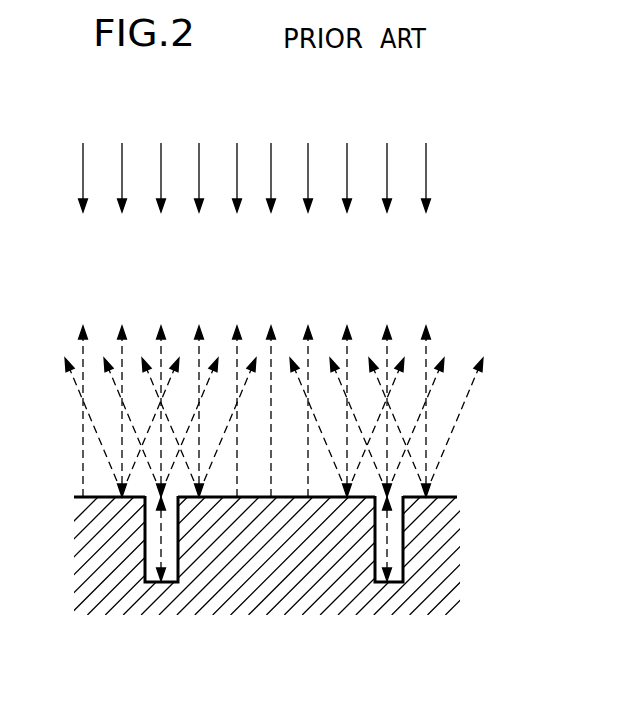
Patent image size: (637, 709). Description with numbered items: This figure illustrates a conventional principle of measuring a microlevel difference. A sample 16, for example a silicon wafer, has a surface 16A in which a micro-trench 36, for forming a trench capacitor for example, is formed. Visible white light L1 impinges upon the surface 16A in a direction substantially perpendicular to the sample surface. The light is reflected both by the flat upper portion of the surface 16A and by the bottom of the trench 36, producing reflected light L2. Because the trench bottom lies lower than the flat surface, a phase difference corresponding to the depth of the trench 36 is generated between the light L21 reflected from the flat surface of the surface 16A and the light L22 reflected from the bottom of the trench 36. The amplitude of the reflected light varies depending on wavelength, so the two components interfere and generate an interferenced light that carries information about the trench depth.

The visible white light L1 is at (427, 163).
The reflected light L2 is at (501, 271).
The light reflected from the bottom of the trench L22 is at (388, 359).
The light reflected from the flat surface L21 is at (430, 359).
The surface 16A is at (445, 496).
The sample 16 is at (474, 540).
The micro-trench 36 is at (399, 520).